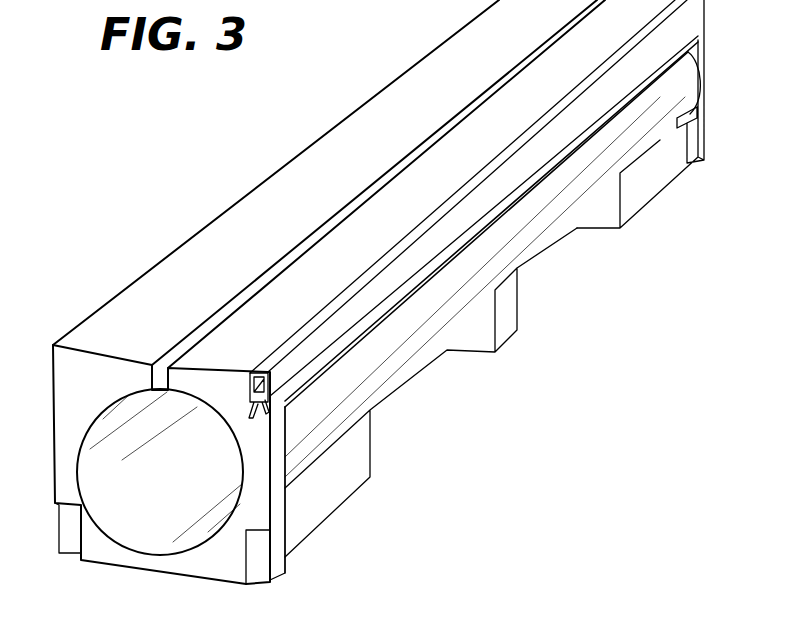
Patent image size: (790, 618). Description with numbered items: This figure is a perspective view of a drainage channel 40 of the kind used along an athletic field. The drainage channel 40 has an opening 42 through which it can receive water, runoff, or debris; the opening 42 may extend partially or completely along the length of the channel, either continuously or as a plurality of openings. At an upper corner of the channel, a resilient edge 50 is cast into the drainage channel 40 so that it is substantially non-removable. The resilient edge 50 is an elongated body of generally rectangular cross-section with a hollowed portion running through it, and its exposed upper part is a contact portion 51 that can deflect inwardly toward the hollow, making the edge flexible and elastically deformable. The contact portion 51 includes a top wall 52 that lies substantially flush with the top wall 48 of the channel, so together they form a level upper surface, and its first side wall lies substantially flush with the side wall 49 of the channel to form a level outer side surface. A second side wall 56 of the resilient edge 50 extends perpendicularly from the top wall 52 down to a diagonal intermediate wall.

The drainage channel 40 is at (250, 192).
The opening 42 is at (435, 134).
The top wall 48 is at (250, 372).
The side wall 49 is at (273, 423).
The resilient edge 50 is at (520, 197).
The contact portion 51 is at (638, 617).
The top wall 52 is at (683, 617).
The second side wall 56 is at (578, 605).